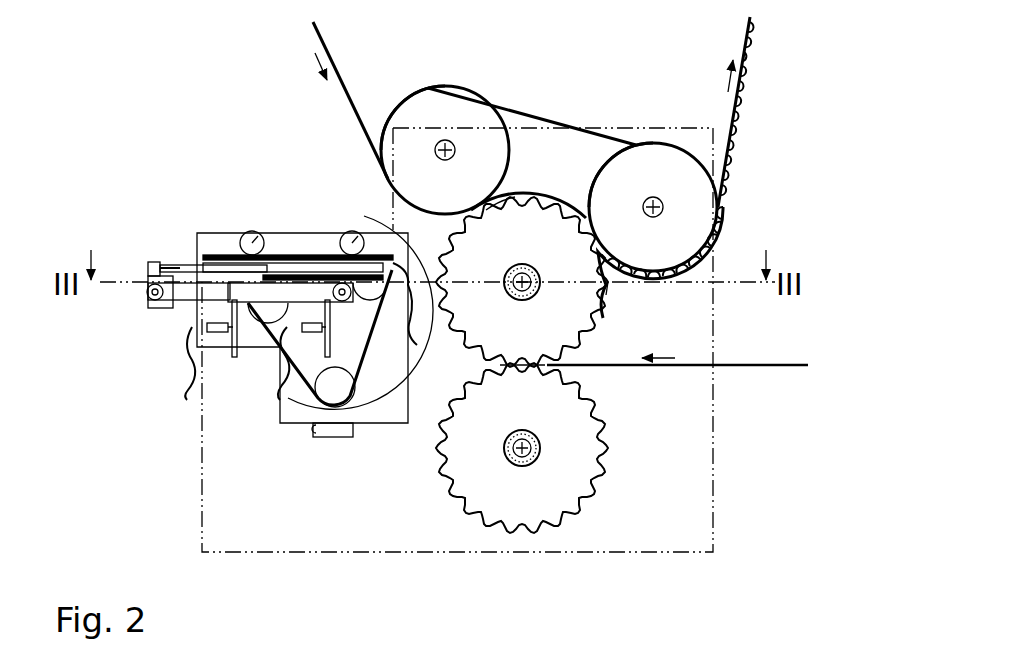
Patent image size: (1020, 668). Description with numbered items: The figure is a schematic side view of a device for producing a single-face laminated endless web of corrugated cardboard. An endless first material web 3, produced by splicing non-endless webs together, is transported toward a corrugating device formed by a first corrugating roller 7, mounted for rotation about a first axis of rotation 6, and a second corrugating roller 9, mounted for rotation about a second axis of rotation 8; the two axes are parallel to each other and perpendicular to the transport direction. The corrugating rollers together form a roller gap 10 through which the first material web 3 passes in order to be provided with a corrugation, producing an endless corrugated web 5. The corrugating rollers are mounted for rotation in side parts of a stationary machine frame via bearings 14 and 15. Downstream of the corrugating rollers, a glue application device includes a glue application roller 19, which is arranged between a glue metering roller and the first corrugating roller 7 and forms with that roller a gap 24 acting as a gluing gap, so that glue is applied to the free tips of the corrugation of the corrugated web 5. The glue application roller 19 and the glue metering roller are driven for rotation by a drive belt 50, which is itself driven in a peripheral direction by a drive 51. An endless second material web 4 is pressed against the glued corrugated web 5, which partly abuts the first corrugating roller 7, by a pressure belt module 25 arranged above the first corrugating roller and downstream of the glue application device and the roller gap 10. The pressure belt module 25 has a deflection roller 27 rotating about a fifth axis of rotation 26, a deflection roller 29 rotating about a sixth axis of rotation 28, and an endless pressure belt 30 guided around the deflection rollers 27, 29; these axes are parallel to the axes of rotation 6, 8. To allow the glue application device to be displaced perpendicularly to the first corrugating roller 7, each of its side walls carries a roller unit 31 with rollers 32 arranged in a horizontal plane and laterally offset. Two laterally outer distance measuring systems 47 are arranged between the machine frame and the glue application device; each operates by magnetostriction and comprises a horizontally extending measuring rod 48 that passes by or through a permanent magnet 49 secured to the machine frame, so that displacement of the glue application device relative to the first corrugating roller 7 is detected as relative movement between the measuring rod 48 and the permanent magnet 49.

The endless first material web 3 is at (725, 365).
The endless second material web 4 is at (344, 82).
The endless corrugated web 5 is at (728, 190).
The first axis of rotation 6 is at (523, 264).
The first corrugating roller 7 is at (608, 300).
The second axis of rotation 8 is at (540, 457).
The second corrugating roller 9 is at (583, 443).
The roller gap 10 is at (547, 366).
The bearing 14 is at (533, 268).
The bearing 15 is at (528, 463).
The glue application roller 19 is at (367, 222).
The gap 24 is at (385, 402).
The pressure belt module 25 is at (480, 86).
The fifth axis of rotation 26 is at (440, 147).
The deflection roller 27 is at (400, 113).
The sixth axis of rotation 28 is at (660, 200).
The deflection roller 29 is at (640, 157).
The endless pressure belt 30 is at (487, 208).
The roller unit 31 is at (268, 222).
The roller 32 is at (343, 233).
The distance measuring system 47 is at (170, 257).
The measuring rod 48 is at (190, 265).
The permanent magnet 49 is at (250, 290).
The drive belt 50 is at (280, 370).
The drive 51 is at (337, 433).